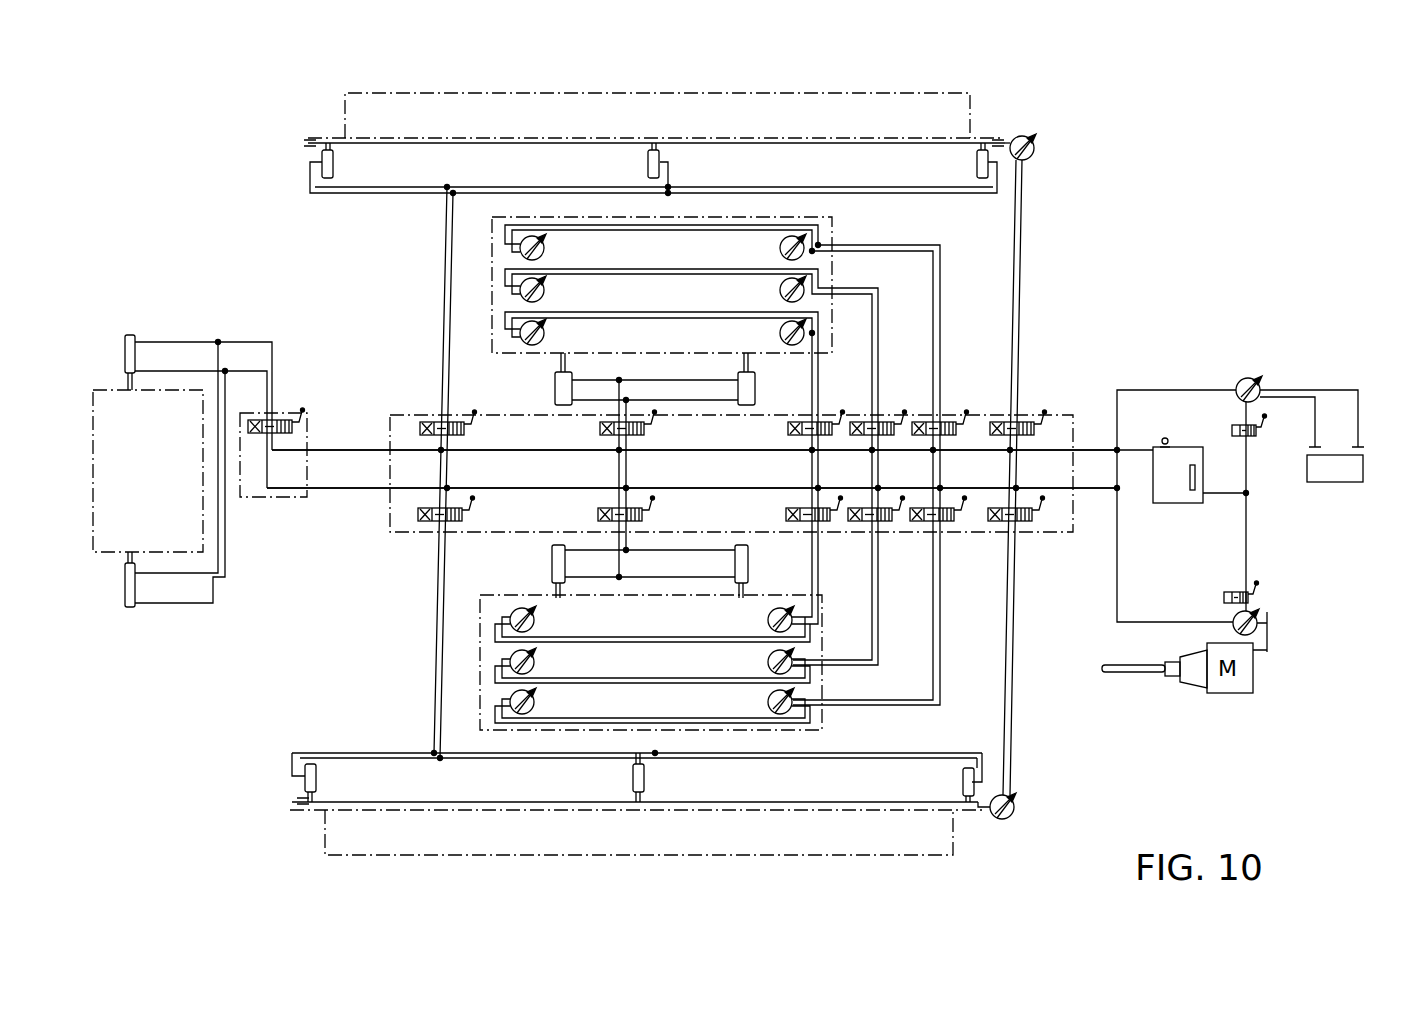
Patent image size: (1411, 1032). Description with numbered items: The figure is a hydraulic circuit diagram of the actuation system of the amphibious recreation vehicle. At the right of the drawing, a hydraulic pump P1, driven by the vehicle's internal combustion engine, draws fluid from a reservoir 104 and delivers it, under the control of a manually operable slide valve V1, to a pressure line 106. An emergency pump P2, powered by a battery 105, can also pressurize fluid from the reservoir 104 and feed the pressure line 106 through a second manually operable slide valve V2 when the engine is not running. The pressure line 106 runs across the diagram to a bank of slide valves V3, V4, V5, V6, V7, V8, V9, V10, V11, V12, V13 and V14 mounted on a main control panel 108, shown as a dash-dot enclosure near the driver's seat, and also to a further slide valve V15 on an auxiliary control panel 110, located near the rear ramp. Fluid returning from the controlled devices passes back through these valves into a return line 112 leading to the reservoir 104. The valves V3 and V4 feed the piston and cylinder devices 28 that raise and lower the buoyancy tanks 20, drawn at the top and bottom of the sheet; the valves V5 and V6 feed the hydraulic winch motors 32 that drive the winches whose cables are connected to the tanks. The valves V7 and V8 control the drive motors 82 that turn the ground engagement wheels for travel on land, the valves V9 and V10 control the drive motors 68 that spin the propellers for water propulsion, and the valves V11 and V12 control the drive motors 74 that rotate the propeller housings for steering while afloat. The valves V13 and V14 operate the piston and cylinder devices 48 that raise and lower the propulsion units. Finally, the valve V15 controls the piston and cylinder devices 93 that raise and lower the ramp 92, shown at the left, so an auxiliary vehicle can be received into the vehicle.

The buoyancy tank 20 is at (608, 104).
The piston and cylinder device 28 is at (335, 166).
The hydraulic motor 32 is at (1036, 152).
The drive motor 82 is at (546, 248).
The drive motor 68 is at (546, 290).
The drive motor 74 is at (546, 333).
The hydraulic piston and cylinder device 48 is at (551, 384).
The ramp 92 is at (106, 396).
The hydraulic piston and cylinder device 93 is at (130, 335).
The reservoir 104 is at (1170, 505).
The battery 105 is at (1338, 482).
The pressure line 106 is at (1090, 488).
The main control panel 108 is at (390, 520).
The auxiliary control panel 110 is at (250, 500).
The return line 112 is at (738, 450).
The manually operable slide valve V1 is at (1226, 593).
The manually operable slide valve V2 is at (1230, 432).
The slide valve V3 is at (412, 422).
The slide valve V4 is at (420, 528).
The slide valve V5 is at (1026, 420).
The slide valve V6 is at (1022, 526).
The slide valve V7 is at (920, 420).
The slide valve V8 is at (916, 524).
The slide valve V9 is at (844, 420).
The slide valve V10 is at (854, 524).
The slide valve V11 is at (786, 435).
The slide valve V12 is at (784, 510).
The slide valve V13 is at (598, 431).
The slide valve V14 is at (598, 510).
The slide valve V15 is at (284, 417).
The hydraulic pump P1 is at (1224, 616).
The emergency pump P2 is at (1252, 376).